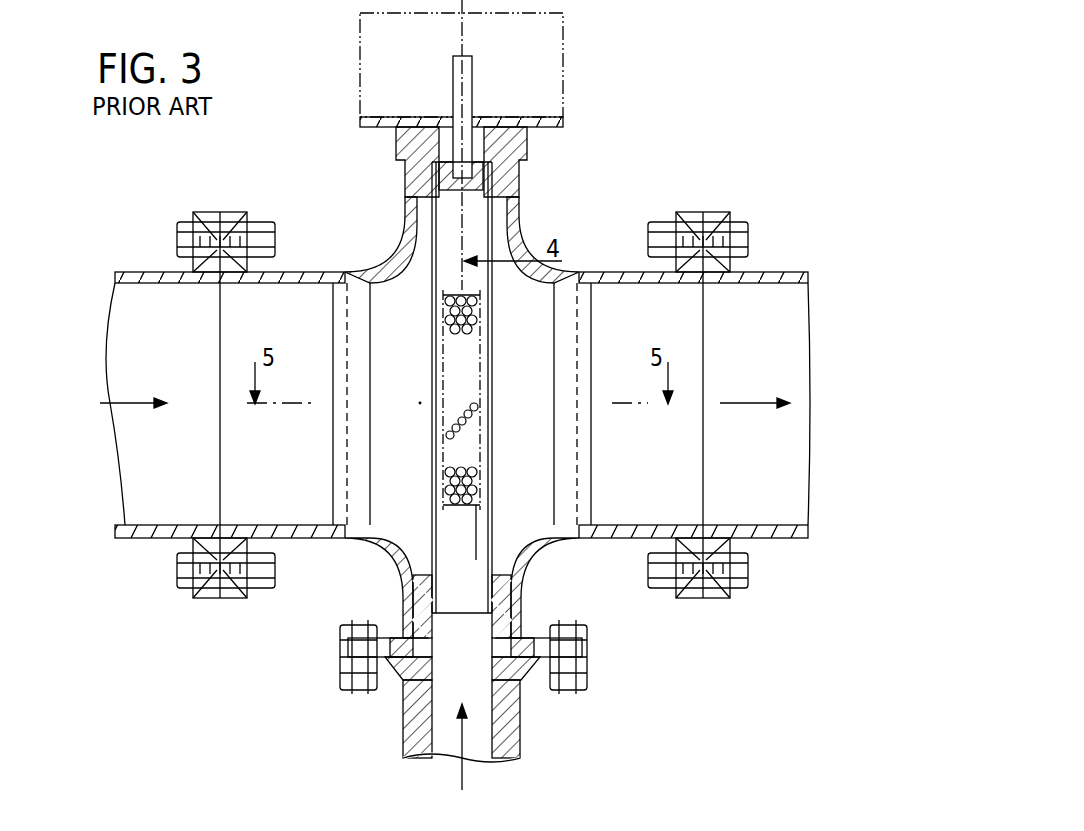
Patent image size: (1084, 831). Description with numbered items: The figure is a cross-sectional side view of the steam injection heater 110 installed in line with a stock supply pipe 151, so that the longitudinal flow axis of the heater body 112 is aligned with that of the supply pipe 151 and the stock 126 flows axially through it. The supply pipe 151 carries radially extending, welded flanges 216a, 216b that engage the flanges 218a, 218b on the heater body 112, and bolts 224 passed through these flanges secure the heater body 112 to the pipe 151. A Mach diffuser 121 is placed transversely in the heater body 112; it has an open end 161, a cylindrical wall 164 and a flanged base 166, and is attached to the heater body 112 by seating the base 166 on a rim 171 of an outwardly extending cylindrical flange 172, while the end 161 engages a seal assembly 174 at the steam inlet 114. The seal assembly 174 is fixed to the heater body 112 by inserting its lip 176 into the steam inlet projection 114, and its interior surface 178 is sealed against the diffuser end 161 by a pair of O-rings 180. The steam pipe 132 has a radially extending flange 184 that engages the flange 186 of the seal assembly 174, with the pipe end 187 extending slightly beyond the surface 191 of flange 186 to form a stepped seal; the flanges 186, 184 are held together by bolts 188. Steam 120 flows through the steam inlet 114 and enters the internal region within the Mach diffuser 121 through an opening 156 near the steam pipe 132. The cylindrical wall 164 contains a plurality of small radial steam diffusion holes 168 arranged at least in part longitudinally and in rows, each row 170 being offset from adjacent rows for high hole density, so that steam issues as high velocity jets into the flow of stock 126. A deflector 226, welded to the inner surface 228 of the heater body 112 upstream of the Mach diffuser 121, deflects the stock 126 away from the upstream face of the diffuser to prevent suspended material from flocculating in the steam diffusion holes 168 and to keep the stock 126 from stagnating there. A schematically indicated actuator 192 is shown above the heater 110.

The heater 110 is at (674, 105).
The heater body 112 is at (392, 248).
The steam inlet 114 is at (517, 640).
The steam 120 is at (466, 780).
The Mach diffuser 121 is at (428, 400).
The stock 126 is at (110, 402).
The steam pipe 132 is at (515, 728).
The stock supply pipe 151 is at (125, 272).
The opening 156 is at (464, 636).
The open end 161 is at (478, 589).
The cylindrical wall 164 is at (490, 540).
The flanged base 166 is at (537, 149).
The steam diffusion holes 168 is at (470, 480).
The row 170 is at (472, 308).
The rim 171 is at (514, 189).
The cylindrical flange 172 is at (577, 267).
The seal assembly 174 is at (402, 633).
The lip 176 is at (523, 597).
The interior surface 178 is at (515, 620).
The O-rings 180 is at (418, 579).
The flange 184 is at (392, 678).
The flange 186 is at (377, 637).
The end 187 is at (430, 650).
The bolts 188 is at (340, 633).
The surface 191 is at (540, 682).
The actuator 192 is at (545, 57).
The flange 216a is at (205, 212).
The flange 216b is at (683, 212).
The flange 218a is at (268, 196).
The flange 218b is at (718, 212).
The bolts 224 is at (182, 587).
The deflector 226 is at (348, 327).
The inner surface 228 is at (288, 284).